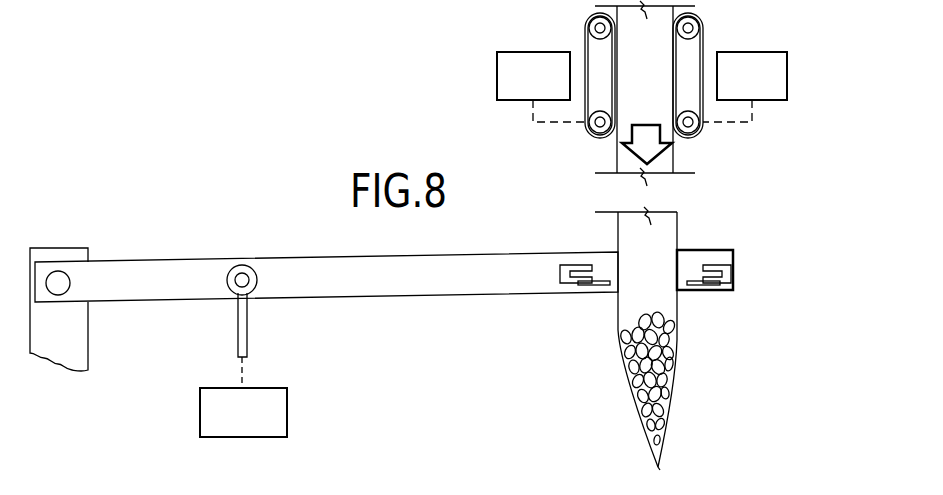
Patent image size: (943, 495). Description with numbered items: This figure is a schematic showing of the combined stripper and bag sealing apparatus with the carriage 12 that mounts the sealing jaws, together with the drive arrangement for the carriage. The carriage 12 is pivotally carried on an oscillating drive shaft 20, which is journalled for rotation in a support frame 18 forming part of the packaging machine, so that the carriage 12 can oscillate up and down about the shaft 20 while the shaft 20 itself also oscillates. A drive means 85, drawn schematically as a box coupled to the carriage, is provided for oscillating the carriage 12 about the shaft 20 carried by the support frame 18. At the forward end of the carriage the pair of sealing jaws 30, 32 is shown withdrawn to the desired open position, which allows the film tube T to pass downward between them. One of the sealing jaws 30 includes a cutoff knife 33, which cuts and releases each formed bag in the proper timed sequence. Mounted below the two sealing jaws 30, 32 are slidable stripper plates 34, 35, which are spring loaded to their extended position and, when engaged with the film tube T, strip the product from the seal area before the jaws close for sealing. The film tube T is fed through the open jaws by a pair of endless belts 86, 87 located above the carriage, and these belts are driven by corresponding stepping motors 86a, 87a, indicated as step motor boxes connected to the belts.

The carriage 12 is at (215, 233).
The support frame 18 is at (75, 325).
The oscillating drive shaft 20 is at (59, 281).
The sealing jaw 30 is at (722, 262).
The sealing jaw 32 is at (568, 265).
The cutoff knife 33 is at (703, 270).
The stripper plate 34 is at (697, 286).
The stripper plate 35 is at (597, 286).
The drive means 85 is at (190, 417).
The endless belt 86 is at (706, 40).
The stepping motor 86a is at (757, 52).
The endless belt 87 is at (585, 42).
The stepping motor 87a is at (497, 70).
The film tube T is at (667, 222).